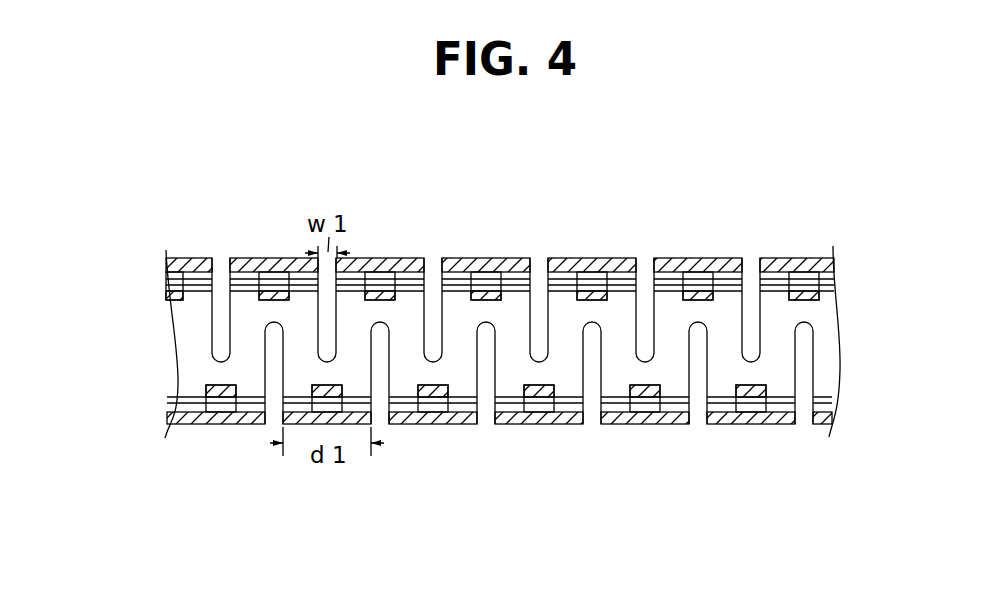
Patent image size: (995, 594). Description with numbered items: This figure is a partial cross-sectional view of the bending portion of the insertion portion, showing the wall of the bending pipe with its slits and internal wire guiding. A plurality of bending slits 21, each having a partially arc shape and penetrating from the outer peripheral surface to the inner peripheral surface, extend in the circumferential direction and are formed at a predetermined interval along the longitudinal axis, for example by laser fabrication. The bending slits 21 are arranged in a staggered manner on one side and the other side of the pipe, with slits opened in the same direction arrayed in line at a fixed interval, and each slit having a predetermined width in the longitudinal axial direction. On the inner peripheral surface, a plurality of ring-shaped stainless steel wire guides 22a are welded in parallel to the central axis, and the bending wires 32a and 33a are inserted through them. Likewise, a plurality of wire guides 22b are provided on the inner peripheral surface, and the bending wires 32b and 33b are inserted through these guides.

The bending slit 21 is at (221, 281).
The wire guide 22a is at (217, 412).
The wire guide 22b is at (275, 284).
The bending wire 32a is at (195, 422).
The bending wire 32b is at (195, 264).
The bending wire 33a is at (180, 406).
The bending wire 33b is at (201, 283).